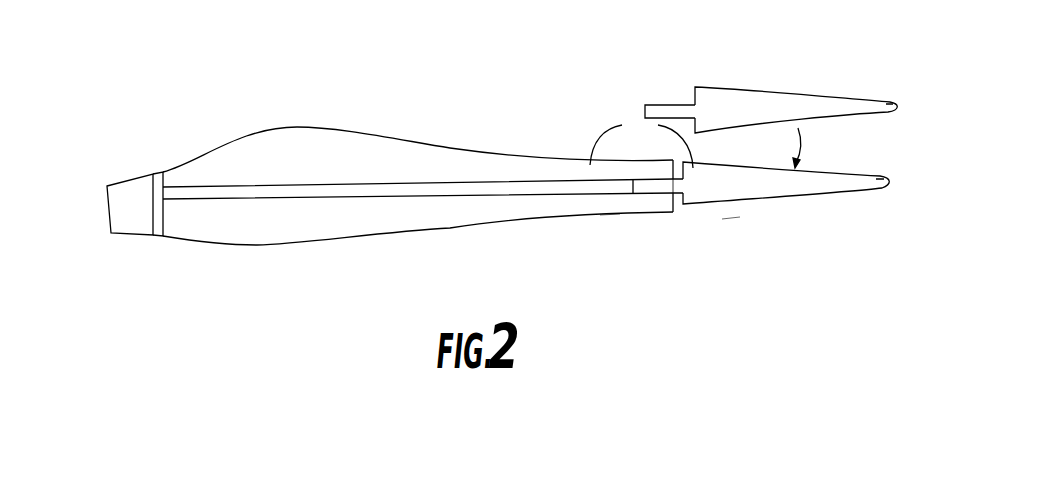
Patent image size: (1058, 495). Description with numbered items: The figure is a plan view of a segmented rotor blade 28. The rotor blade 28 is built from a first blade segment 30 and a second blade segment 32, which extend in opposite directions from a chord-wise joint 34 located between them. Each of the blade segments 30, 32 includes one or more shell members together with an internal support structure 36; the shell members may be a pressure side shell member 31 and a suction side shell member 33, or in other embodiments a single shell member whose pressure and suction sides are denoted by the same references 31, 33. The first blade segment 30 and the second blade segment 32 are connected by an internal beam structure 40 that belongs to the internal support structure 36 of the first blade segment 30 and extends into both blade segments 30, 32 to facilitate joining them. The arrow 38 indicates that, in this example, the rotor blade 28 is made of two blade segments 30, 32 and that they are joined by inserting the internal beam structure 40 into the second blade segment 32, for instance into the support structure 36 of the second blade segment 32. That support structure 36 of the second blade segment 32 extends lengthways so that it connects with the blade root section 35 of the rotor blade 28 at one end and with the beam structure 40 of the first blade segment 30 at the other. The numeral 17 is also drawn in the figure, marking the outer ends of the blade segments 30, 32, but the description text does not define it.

The rotor blade 28 is at (137, 83).
The blade root section 35 is at (138, 220).
The second blade segment 32 is at (208, 236).
The internal support structure 36 is at (414, 178).
The internal beam structure 40 is at (653, 105).
The first blade segment 30 is at (767, 93).
The tip 17 is at (897, 103).
The suction side shell member 33 is at (641, 143).
The arrow 38 is at (800, 140).
The chord-wise joint 34 is at (676, 203).
The pressure side shell member 31 is at (619, 217).